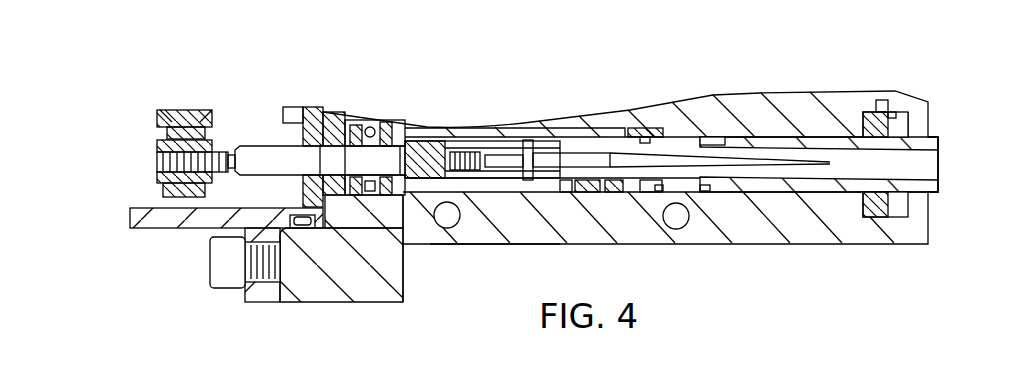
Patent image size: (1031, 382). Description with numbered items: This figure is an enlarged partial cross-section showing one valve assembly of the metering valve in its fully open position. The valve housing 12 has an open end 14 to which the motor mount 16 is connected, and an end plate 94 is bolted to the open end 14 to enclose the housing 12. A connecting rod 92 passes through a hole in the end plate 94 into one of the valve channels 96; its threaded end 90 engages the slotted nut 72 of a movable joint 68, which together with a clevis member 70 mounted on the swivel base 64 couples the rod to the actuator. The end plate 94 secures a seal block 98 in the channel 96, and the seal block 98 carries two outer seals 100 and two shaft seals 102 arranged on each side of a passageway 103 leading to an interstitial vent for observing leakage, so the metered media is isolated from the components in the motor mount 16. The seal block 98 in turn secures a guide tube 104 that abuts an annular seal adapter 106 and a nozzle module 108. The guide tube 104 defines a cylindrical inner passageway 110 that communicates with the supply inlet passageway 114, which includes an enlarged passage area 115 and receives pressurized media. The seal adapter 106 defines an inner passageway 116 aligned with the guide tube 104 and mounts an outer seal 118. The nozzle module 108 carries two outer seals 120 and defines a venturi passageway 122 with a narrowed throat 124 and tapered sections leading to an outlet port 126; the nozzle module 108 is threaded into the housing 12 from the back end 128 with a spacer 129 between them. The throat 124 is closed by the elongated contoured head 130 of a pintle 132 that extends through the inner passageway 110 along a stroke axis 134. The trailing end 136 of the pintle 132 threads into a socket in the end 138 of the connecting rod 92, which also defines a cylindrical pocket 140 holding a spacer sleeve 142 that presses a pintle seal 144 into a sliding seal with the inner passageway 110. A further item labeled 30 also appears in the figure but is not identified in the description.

The valve housing 12 is at (777, 250).
The open end 14 is at (303, 300).
The motor mount 16 is at (160, 232).
The fastening screw 30 is at (258, 302).
The swivel base 64 is at (165, 113).
The movable joint 68 is at (130, 175).
The clevis member 70 is at (183, 112).
The slotted nut 72 is at (213, 177).
The threaded end 90 is at (160, 163).
The connecting rod 92 is at (247, 153).
The end plate 94 is at (312, 108).
The valve channel 96 is at (858, 115).
The seal block 98 is at (338, 118).
The outer seal 100 is at (386, 124).
The shaft seal 102 is at (348, 160).
The passageway 103 is at (366, 122).
The guide tube 104 is at (425, 128).
The annular seal adapter 106 is at (610, 131).
The nozzle module 108 is at (786, 140).
The cylindrical inner passageway 110 is at (455, 136).
The supply inlet passageway 114 is at (547, 255).
The enlarged passage area 115 is at (577, 207).
The inner passageway 116 is at (599, 202).
The outer seal 118 is at (578, 136).
The outer seal 120 is at (633, 138).
The venturi passageway 122 is at (912, 165).
The narrowed throat 124 is at (641, 130).
The outlet port 126 is at (947, 149).
The back end 128 is at (934, 239).
The spacer 129 is at (876, 112).
The elongated contoured head 130 is at (712, 136).
The pintle 132 is at (535, 152).
The stroke axis 134 is at (948, 163).
The trailing end 136 is at (420, 273).
The connecting rod end 138 is at (462, 221).
The cylindrical pocket 140 is at (593, 222).
The spacer sleeve 142 is at (495, 141).
The pintle seal 144 is at (548, 160).